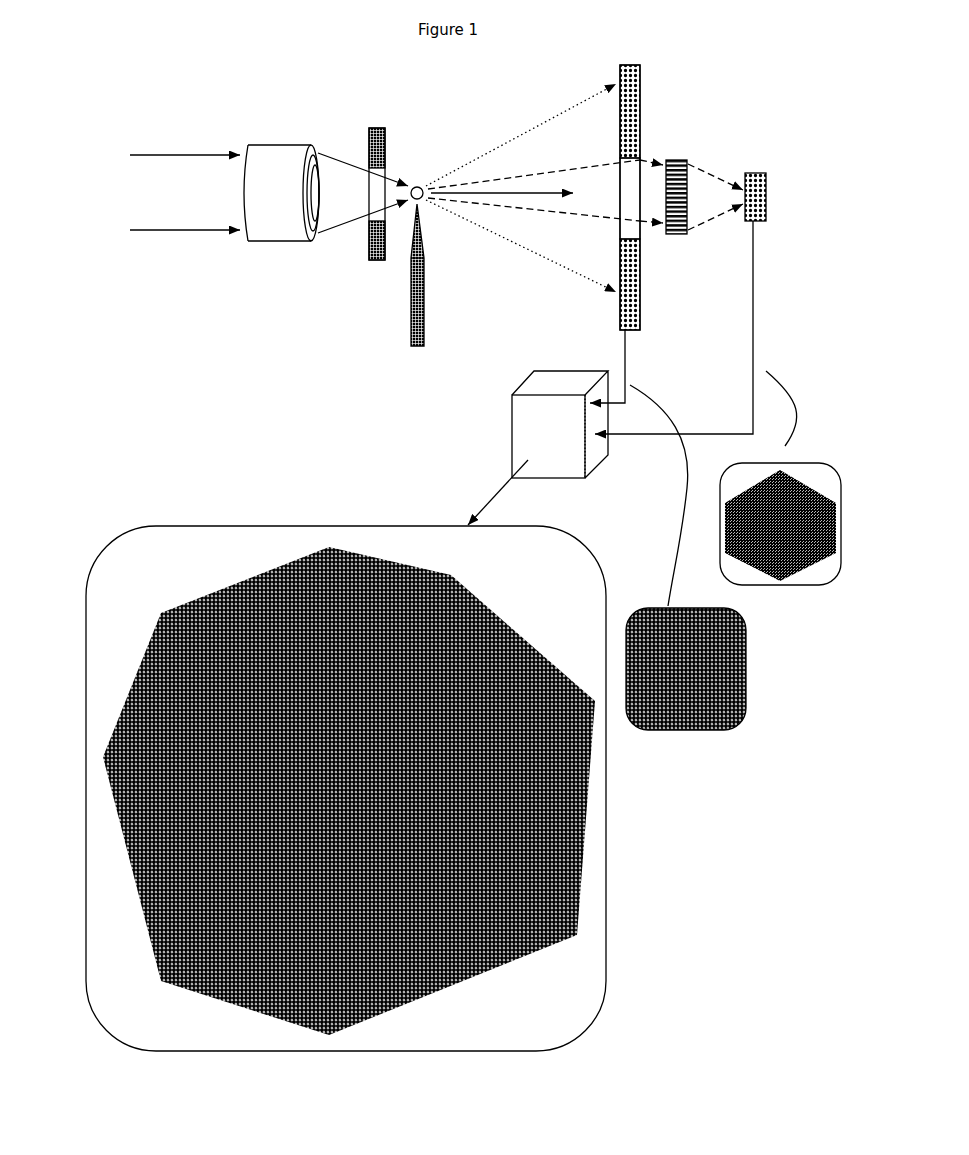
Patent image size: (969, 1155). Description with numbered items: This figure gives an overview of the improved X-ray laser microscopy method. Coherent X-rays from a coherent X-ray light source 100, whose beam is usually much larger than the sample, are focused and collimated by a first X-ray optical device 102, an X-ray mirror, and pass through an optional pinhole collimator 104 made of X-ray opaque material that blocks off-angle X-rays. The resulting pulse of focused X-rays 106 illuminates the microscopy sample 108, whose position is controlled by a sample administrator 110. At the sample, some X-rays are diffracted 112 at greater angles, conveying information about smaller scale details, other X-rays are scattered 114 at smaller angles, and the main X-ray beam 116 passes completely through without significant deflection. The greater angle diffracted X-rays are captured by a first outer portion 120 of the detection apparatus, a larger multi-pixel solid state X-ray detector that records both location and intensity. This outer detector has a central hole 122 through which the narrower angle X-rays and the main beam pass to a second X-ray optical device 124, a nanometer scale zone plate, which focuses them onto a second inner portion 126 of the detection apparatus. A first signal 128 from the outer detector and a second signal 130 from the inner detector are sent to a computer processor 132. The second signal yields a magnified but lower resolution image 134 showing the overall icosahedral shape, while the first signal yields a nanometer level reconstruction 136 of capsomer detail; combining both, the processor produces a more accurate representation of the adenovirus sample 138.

The coherent X-ray light source 100 is at (183, 228).
The first X-ray optical device 102 is at (290, 133).
The pinhole collimator 104 is at (369, 110).
The focused X-rays 106 is at (390, 167).
The microscopy sample 108 is at (413, 170).
The sample administrator 110 is at (397, 267).
The diffracted X-rays 112 is at (545, 100).
The scattered X-rays 114 is at (580, 157).
The main X-ray beam 116 is at (516, 193).
The first outer portion of detection apparatus 120 is at (640, 75).
The central hole 122 is at (618, 190).
The second X-ray optical device 124 is at (667, 140).
The second inner portion of detection apparatus 126 is at (762, 175).
The first signal 128 is at (622, 353).
The second signal 130 is at (748, 312).
The computer processor 132 is at (538, 448).
The magnified lower resolution image 134 is at (828, 452).
The nanometer level resolution representation 136 is at (750, 672).
The representation of adenovirus sample 138 is at (209, 515).